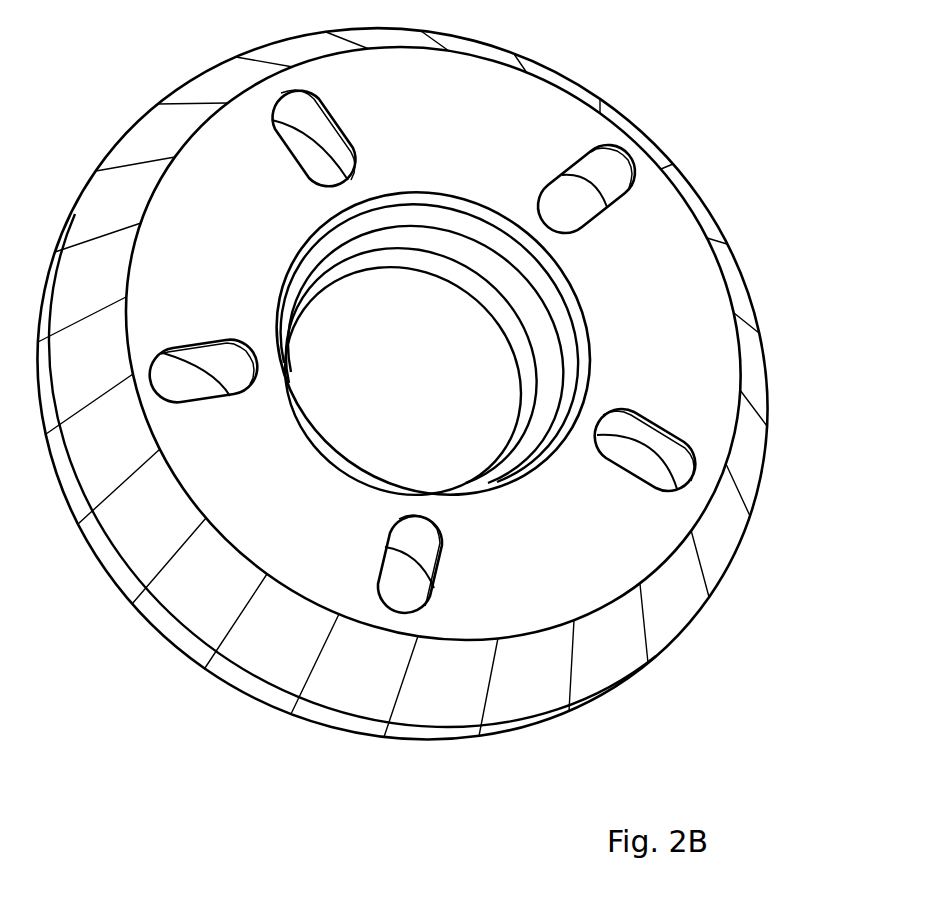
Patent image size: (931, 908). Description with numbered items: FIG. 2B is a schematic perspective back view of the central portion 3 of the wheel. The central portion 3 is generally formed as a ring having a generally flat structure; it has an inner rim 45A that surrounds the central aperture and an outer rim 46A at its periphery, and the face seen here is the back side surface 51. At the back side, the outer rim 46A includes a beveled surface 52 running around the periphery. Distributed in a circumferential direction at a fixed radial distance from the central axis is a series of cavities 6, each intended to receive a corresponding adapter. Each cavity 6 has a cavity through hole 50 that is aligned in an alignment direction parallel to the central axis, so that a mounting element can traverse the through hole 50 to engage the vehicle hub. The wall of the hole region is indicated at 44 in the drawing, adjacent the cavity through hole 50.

The central portion 3 is at (748, 153).
The cavity 6 is at (623, 145).
The through hole wall 44 is at (603, 173).
The inner rim 45A is at (523, 352).
The outer rim 46A is at (734, 555).
The cavity through hole 50 is at (569, 205).
The back side surface 51 is at (541, 564).
The beveled surface 52 is at (541, 685).